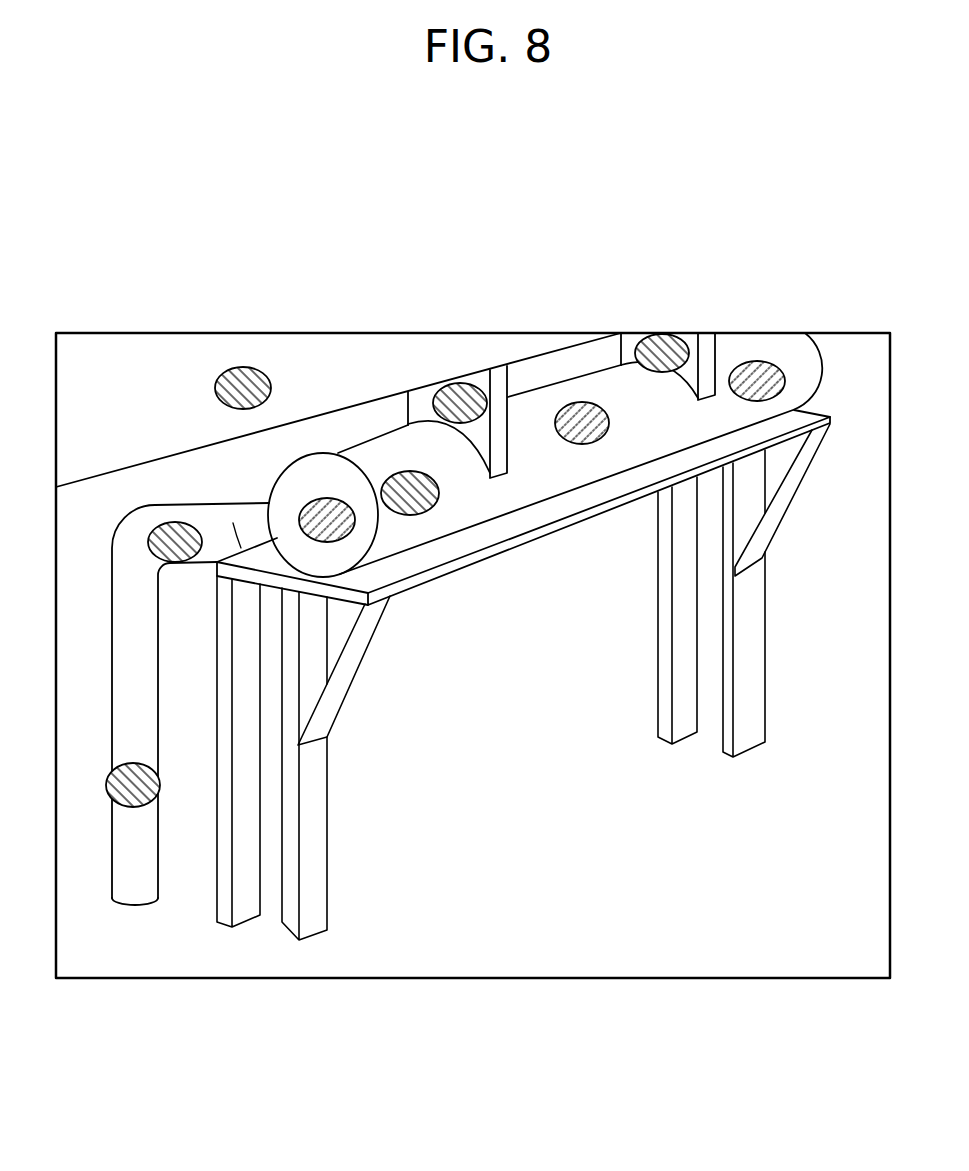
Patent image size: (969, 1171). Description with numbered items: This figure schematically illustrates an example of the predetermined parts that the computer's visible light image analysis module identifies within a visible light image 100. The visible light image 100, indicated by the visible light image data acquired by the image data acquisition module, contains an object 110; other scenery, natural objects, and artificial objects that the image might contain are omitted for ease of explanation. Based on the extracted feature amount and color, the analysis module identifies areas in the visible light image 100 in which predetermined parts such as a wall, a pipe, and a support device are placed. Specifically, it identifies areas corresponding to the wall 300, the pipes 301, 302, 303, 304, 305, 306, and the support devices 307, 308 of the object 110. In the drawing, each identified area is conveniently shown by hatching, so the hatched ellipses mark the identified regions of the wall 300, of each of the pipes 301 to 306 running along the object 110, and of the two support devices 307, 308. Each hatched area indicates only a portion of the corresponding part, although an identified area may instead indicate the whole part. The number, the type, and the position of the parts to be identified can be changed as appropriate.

The visible light image 100 is at (845, 345).
The object 110 is at (760, 345).
The wall 300 is at (246, 395).
The pipe 301 is at (135, 780).
The pipe 302 is at (176, 532).
The pipe 303 is at (313, 515).
The pipe 304 is at (417, 493).
The pipe 305 is at (590, 417).
The pipe 306 is at (773, 377).
The support device 307 is at (460, 408).
The support device 308 is at (668, 352).